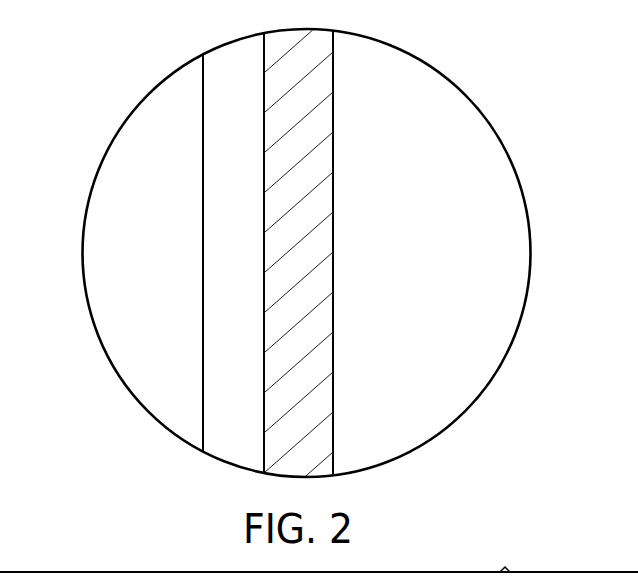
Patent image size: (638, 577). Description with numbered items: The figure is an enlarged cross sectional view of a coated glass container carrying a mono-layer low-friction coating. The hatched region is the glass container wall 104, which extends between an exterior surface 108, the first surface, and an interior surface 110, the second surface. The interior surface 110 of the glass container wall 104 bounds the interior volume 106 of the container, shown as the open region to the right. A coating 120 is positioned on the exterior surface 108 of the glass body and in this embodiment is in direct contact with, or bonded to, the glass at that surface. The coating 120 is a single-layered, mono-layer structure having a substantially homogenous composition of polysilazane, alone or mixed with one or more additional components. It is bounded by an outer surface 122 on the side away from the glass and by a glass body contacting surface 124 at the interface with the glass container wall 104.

The glass container wall 104 is at (308, 339).
The interior volume 106 is at (453, 238).
The exterior surface 108 is at (264, 57).
The interior surface 110 is at (333, 169).
The coating 120 is at (192, 237).
The outer surface 122 is at (203, 135).
The glass body contacting surface 124 is at (264, 117).